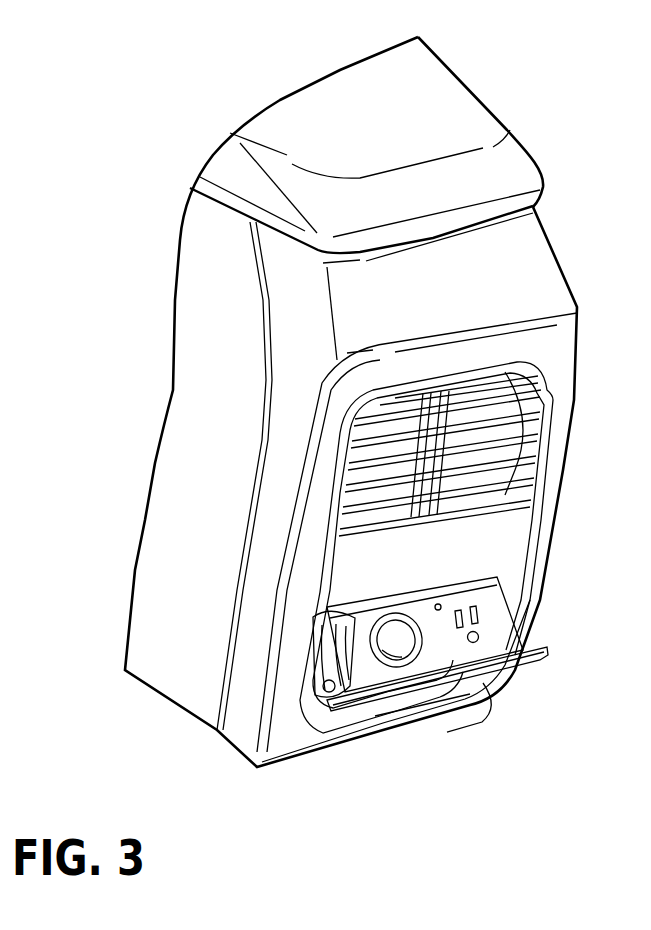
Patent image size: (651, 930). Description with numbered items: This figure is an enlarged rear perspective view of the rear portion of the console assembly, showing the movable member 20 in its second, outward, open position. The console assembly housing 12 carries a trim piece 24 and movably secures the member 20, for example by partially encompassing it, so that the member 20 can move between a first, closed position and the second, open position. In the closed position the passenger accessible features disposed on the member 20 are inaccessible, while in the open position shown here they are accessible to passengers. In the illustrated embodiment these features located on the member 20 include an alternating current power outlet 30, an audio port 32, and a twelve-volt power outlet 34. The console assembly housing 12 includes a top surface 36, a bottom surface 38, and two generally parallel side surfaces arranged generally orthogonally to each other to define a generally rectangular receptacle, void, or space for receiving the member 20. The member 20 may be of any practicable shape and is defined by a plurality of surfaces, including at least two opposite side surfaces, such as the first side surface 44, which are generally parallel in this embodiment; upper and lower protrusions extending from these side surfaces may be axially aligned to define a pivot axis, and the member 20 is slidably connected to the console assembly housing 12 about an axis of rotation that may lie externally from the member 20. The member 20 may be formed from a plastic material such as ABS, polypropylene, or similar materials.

The console assembly housing 12 is at (197, 293).
The trim piece 24 is at (541, 412).
The top surface 36 is at (417, 582).
The audio port 32 is at (442, 606).
The alternating current power outlet 30 is at (484, 615).
The member 20 is at (525, 629).
The 12-volt power outlet 34 is at (407, 648).
The first side surface 44 is at (333, 665).
The bottom surface 38 is at (387, 714).